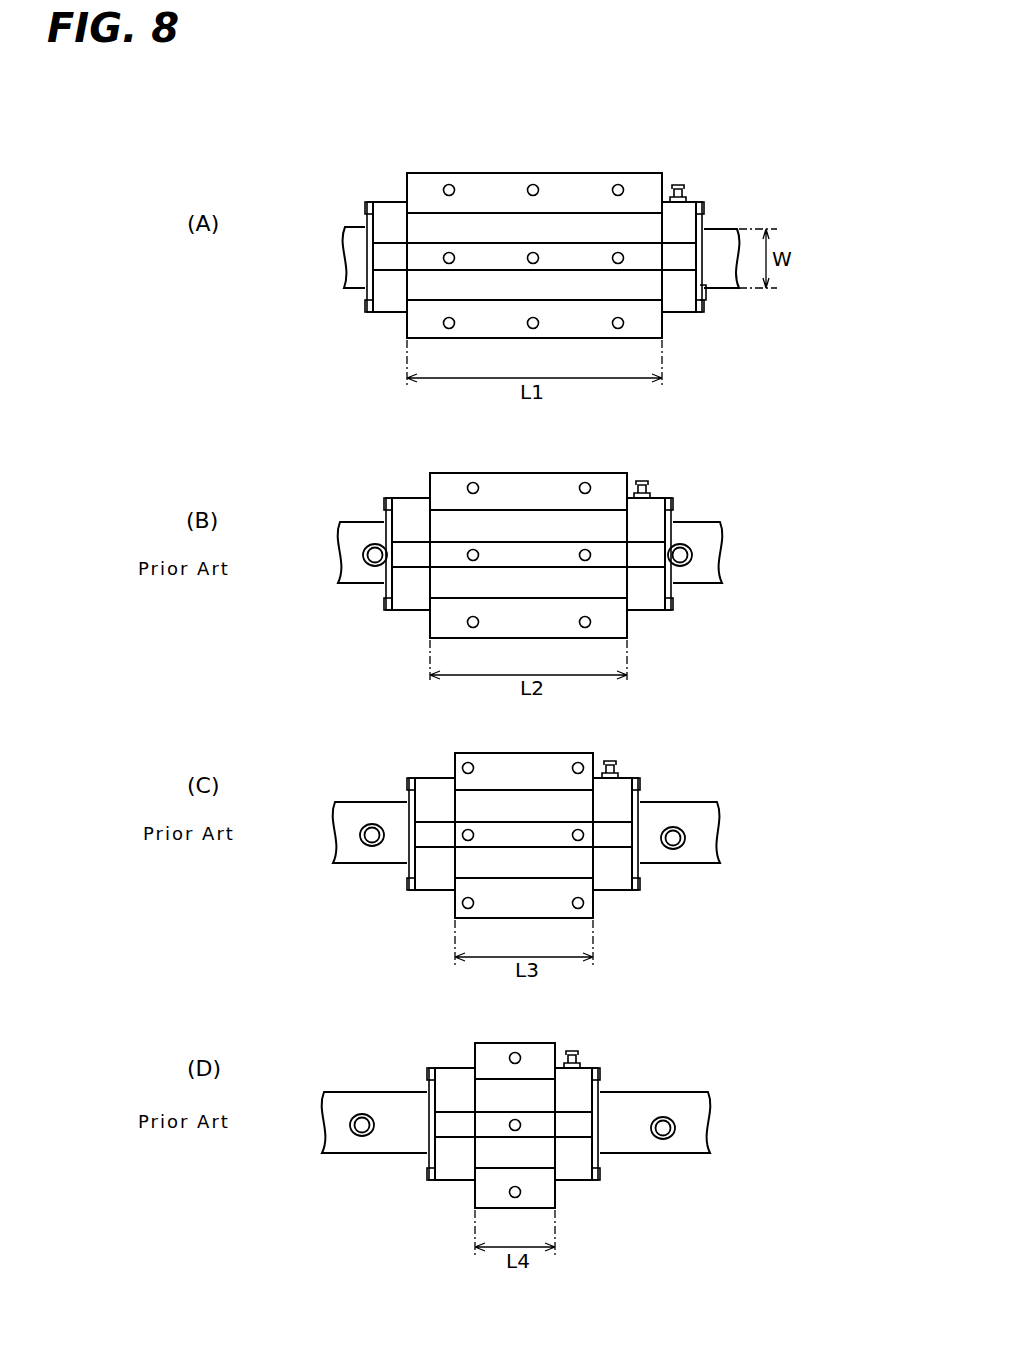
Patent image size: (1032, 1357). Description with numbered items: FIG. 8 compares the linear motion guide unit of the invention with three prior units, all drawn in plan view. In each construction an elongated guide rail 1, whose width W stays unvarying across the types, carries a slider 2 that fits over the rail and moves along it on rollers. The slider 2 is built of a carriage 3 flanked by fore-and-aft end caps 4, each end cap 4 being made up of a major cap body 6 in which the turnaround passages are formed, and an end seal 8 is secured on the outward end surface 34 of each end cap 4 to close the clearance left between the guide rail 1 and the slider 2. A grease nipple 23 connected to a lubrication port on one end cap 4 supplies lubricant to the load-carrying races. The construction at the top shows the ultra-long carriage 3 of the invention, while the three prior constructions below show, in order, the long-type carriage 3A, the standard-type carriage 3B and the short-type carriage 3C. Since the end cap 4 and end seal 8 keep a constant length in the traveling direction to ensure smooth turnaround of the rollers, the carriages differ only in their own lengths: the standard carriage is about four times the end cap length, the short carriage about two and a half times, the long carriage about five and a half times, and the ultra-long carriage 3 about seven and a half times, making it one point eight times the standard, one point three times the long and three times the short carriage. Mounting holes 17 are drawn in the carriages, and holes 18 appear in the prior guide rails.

The guide rail 1 is at (349, 258).
The slider 2 is at (641, 171).
The carriage 3 is at (492, 193).
The block body (prior art) 3A is at (507, 490).
The block body (prior art) 3B is at (499, 772).
The block body (prior art) 3C is at (492, 1058).
The end cap 4 is at (386, 303).
The major cap body 6 is at (526, 723).
The end seal 8 is at (368, 214).
The mounting holes 17 is at (612, 256).
The rail mounting holes 18 is at (368, 548).
The grease nipple 23 is at (684, 190).
The outward end surface 34 is at (710, 300).